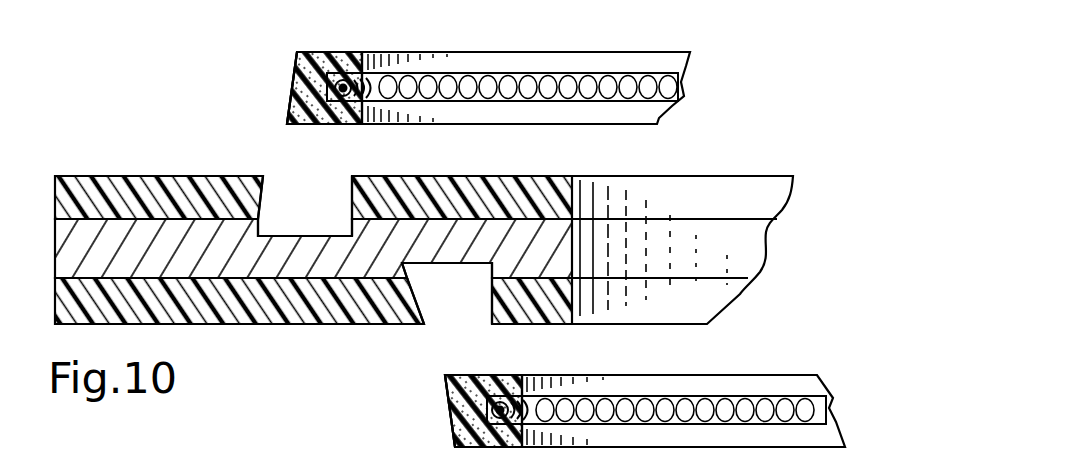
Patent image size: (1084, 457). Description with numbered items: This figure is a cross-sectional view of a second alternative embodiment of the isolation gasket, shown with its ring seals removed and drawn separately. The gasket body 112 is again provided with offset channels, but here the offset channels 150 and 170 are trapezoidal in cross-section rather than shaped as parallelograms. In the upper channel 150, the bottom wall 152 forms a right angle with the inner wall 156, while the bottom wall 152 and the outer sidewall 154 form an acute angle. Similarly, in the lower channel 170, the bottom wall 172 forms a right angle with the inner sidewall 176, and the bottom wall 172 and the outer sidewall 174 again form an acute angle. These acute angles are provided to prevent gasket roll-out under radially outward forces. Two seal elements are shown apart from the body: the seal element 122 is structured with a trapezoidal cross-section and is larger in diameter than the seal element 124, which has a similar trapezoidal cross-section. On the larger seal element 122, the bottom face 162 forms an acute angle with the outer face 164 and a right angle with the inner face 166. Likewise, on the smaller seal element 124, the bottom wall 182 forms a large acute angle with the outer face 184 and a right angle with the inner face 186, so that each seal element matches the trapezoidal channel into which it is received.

The gasket body 112 is at (143, 157).
The seal element 122 is at (440, 79).
The seal element 124 is at (602, 390).
The channel 150 is at (299, 186).
The bottom wall 152 is at (318, 300).
The outer sidewall 154 is at (262, 213).
The inner wall 156 is at (318, 300).
The bottom face 162 is at (291, 122).
The outer face 164 is at (291, 96).
The inner face 166 is at (387, 52).
The channel 170 is at (450, 332).
The bottom wall 172 is at (402, 264).
The outer sidewall 174 is at (433, 186).
The inner sidewall 176 is at (505, 297).
The bottom wall 182 is at (472, 375).
The outer face 184 is at (449, 407).
The inner face 186 is at (540, 387).